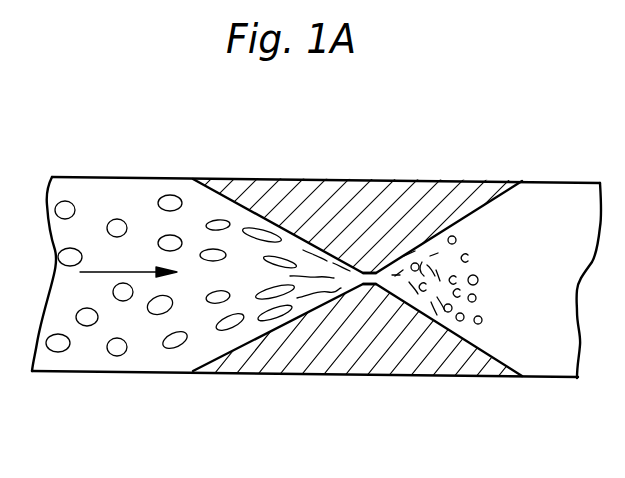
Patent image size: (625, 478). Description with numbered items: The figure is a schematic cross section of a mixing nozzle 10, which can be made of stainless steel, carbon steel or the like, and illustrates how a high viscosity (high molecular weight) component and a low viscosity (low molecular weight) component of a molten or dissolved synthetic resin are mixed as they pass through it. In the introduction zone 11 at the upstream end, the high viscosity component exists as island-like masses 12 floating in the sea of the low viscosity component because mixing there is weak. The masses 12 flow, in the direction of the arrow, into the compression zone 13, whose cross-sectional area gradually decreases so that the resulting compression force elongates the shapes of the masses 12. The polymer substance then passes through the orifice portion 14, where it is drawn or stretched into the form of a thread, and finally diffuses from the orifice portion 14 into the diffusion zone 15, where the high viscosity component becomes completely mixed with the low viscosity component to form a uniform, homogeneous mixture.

The mixing nozzle 10 is at (311, 178).
The introduction zone 11 is at (93, 253).
The masses 12 is at (117, 356).
The compression zone 13 is at (260, 274).
The orifice portion 14 is at (373, 272).
The diffusion zone 15 is at (470, 266).